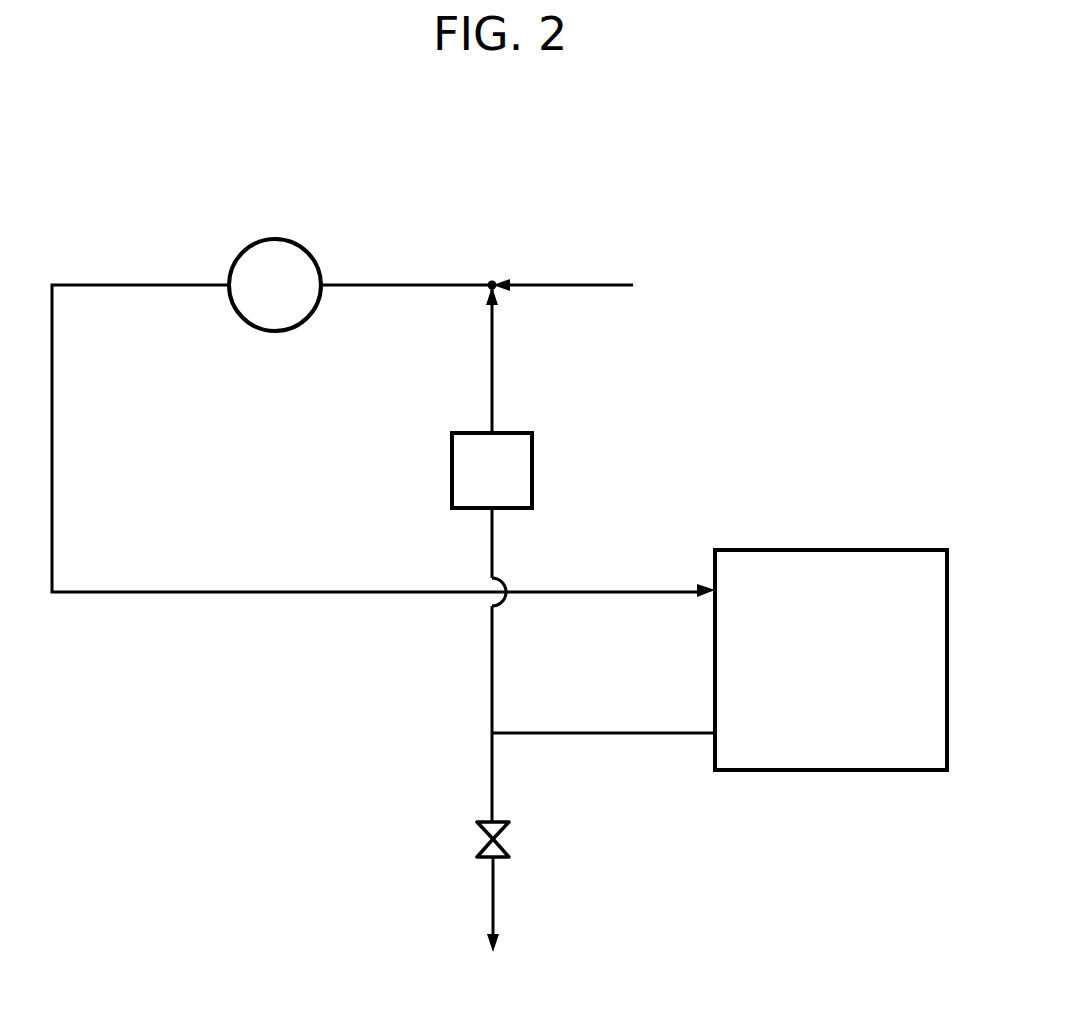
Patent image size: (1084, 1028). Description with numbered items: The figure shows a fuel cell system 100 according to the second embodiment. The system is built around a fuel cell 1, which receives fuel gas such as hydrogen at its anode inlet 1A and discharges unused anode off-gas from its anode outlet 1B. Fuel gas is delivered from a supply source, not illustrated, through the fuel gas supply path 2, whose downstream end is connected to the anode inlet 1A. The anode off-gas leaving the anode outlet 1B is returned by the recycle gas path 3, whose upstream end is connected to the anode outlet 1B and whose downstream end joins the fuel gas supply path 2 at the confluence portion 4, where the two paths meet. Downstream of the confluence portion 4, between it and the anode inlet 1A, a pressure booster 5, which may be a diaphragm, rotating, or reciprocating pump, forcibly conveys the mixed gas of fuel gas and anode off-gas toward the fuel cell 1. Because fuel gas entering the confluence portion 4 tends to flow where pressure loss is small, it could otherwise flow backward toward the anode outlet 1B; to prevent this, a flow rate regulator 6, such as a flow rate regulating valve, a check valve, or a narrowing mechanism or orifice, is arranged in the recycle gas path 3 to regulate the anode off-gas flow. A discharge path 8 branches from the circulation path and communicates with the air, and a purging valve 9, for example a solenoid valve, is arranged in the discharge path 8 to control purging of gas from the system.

The fuel cell system 100 is at (648, 162).
The fuel cell 1 is at (835, 550).
The anode inlet 1A is at (715, 588).
The anode outlet 1B is at (715, 735).
The fuel gas supply path 2 is at (152, 597).
The recycle gas path 3 is at (492, 657).
The confluence portion 4 is at (489, 282).
The pressure booster 5 is at (288, 300).
The flow rate regulator 6 is at (505, 485).
The discharge path 8 is at (492, 757).
The purging valve 9 is at (478, 835).